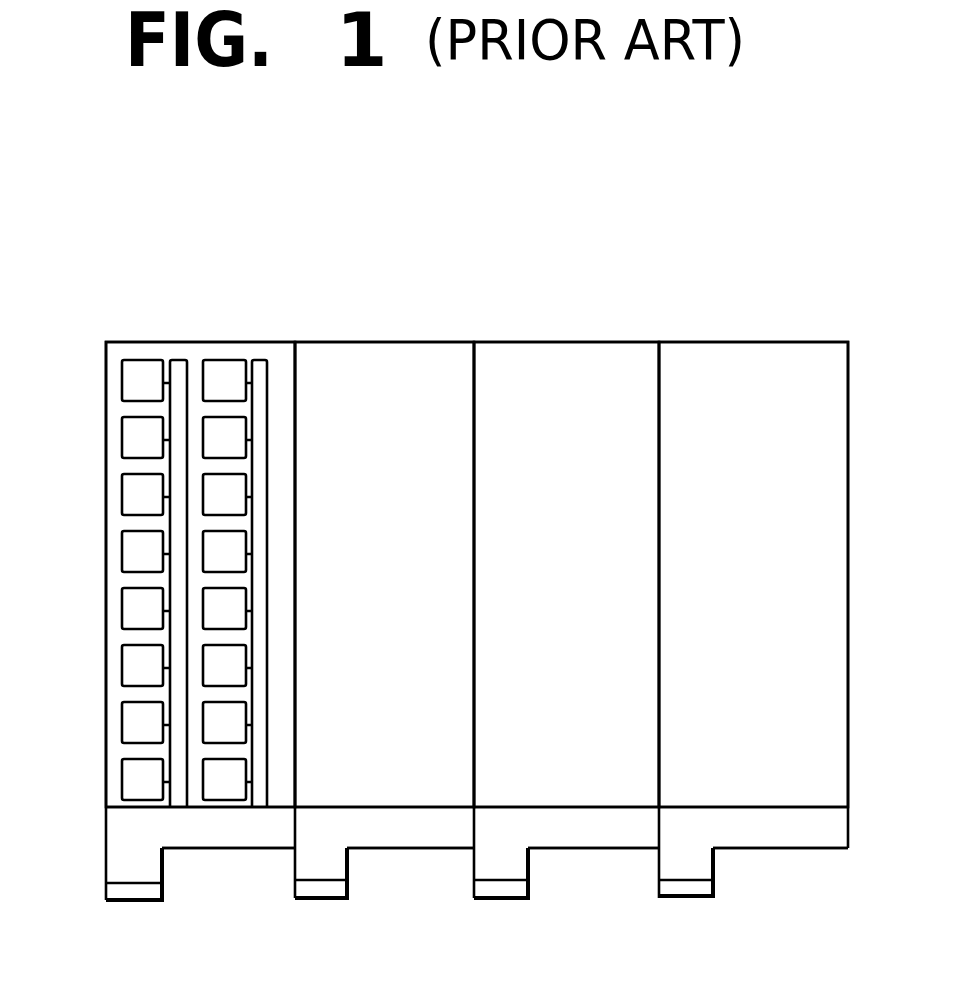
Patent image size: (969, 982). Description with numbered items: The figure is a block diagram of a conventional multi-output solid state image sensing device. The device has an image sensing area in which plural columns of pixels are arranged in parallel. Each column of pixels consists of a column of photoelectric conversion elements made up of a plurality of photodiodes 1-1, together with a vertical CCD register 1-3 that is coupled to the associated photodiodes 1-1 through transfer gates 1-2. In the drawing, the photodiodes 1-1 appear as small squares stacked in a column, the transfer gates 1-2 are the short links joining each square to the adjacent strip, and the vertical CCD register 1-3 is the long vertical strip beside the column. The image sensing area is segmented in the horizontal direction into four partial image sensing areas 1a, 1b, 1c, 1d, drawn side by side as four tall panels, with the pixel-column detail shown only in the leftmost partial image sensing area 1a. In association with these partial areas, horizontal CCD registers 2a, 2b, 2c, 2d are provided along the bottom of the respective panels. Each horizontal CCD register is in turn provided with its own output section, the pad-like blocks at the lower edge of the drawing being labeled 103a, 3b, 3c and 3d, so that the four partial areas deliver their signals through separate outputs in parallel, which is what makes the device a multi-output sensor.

The partial image sensing area 1a is at (187, 350).
The partial image sensing area 1b is at (387, 348).
The partial image sensing area 1c is at (562, 347).
The partial image sensing area 1d is at (762, 345).
The photodiodes 1-1 is at (135, 384).
The transfer gates 1-2 is at (166, 394).
The vertical CCD registers 1-3 is at (178, 582).
The horizontal CCD register 2a is at (215, 843).
The horizontal CCD register 2b is at (408, 838).
The horizontal CCD register 2c is at (583, 838).
The horizontal CCD register 2d is at (775, 835).
The first pad 103a is at (135, 893).
The output section 3b is at (322, 888).
The output section 3c is at (505, 888).
The output section 3d is at (688, 888).